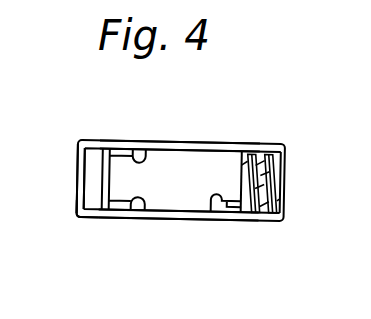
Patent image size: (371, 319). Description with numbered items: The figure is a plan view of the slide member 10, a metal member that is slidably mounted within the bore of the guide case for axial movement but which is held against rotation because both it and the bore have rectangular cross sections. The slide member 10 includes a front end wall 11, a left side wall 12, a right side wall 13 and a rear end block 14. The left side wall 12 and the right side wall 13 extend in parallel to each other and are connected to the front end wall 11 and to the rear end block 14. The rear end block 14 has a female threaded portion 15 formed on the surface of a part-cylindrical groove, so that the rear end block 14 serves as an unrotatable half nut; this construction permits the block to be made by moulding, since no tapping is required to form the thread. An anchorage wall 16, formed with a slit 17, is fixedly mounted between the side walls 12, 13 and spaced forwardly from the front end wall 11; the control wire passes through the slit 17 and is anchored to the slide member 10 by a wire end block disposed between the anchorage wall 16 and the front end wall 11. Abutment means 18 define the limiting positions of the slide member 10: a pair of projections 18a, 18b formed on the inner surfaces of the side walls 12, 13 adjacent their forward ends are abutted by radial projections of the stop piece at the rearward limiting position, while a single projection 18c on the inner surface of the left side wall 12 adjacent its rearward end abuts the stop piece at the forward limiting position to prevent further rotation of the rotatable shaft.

The slide member 10 is at (250, 145).
The front end wall 11 is at (112, 180).
The left side wall 12 is at (183, 222).
The right side wall 13 is at (185, 141).
The rear end block 14 is at (241, 160).
The female threaded portion 15 is at (285, 180).
The anchorage wall 16 is at (78, 198).
The slit 17 is at (80, 176).
The abutment means 18 is at (205, 187).
The projection 18a is at (149, 212).
The projection 18b is at (146, 149).
The projection 18c is at (213, 211).